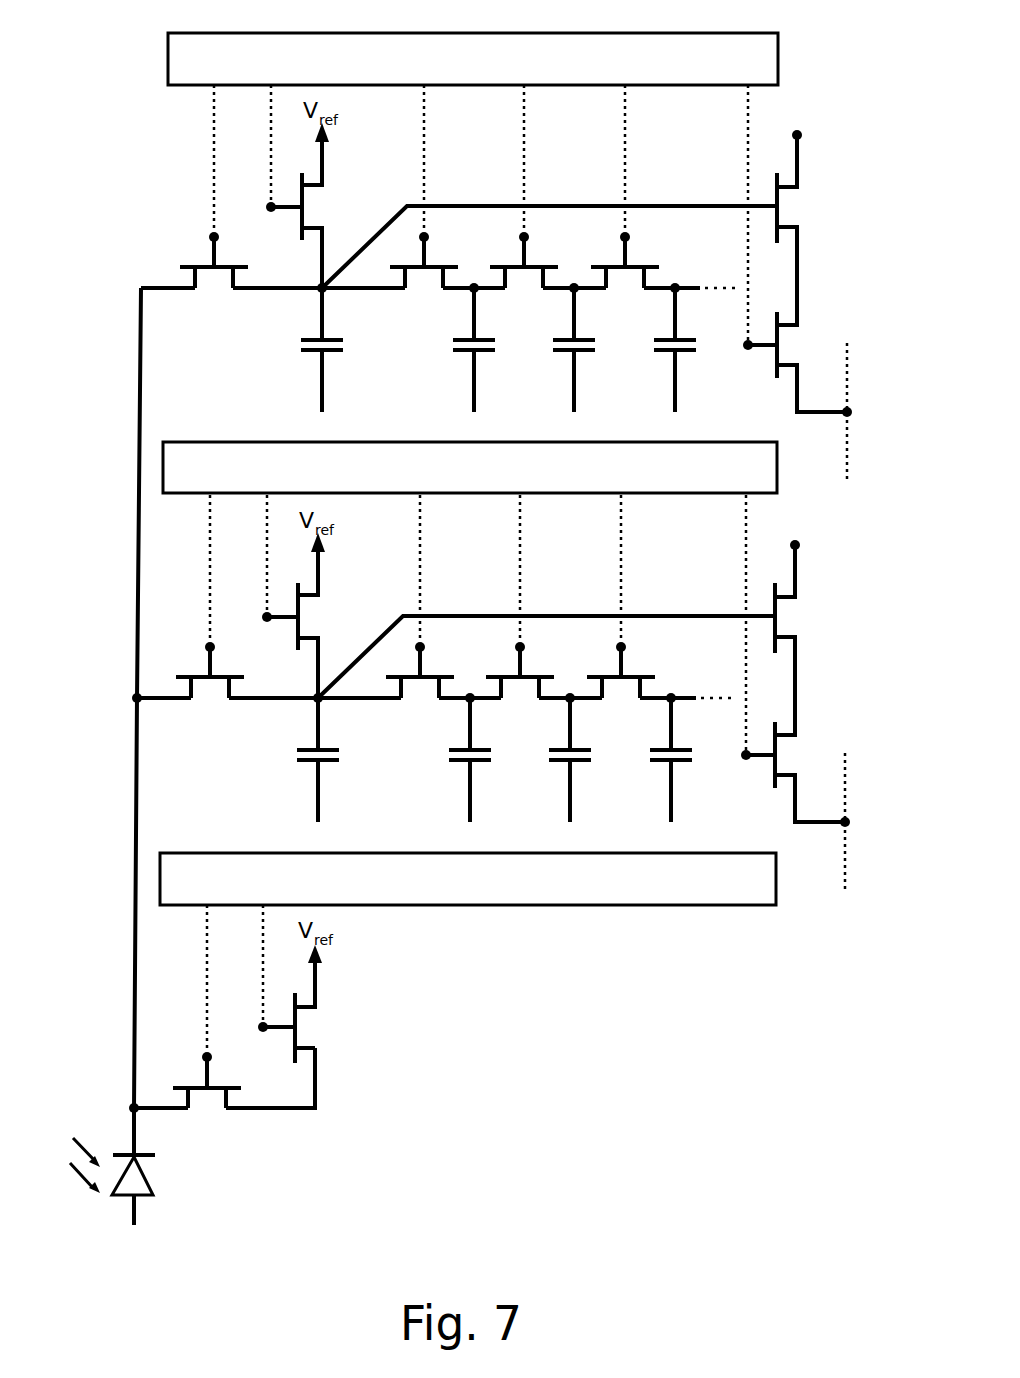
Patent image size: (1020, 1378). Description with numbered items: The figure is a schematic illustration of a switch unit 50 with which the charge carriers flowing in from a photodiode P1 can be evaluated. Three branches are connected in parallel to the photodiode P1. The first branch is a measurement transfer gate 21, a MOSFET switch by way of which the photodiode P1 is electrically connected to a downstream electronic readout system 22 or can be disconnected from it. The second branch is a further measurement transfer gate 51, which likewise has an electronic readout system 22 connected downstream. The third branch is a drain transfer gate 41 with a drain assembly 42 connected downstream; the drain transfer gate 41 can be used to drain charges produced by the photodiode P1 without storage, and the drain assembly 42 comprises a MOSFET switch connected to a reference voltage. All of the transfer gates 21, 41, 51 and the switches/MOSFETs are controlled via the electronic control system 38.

The switch unit 50 is at (126, 150).
The measurement transfer gate 21 is at (198, 263).
The electronic readout system 22 is at (276, 313).
The electronic control system 38 is at (487, 50).
The further measurement transfer gate 51 is at (199, 672).
The drain transfer gate 41 is at (197, 1083).
The drain assembly 42 is at (338, 1043).
The photodiode P1 is at (125, 1198).